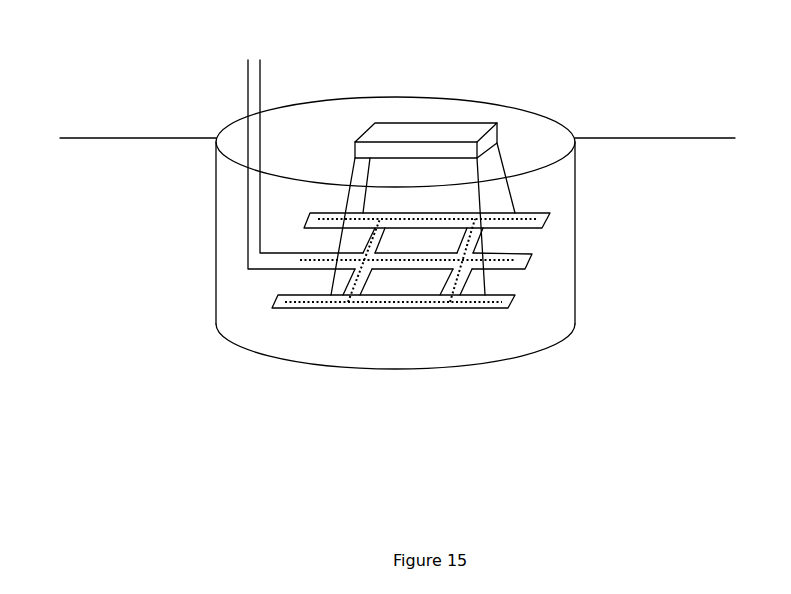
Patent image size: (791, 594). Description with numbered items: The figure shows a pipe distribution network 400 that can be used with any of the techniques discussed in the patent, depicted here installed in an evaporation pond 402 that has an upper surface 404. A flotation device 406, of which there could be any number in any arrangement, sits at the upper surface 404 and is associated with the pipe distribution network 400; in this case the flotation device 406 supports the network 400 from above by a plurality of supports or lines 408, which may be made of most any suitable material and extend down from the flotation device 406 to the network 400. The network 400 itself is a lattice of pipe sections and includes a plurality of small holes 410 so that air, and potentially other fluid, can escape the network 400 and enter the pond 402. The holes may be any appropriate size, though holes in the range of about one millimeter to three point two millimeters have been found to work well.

The pipe distribution network 400 is at (292, 310).
The evaporation pond 402 is at (560, 312).
The upper surface 404 is at (540, 130).
The flotation device 406 is at (455, 133).
The supports or lines 408 is at (512, 192).
The small holes 410 is at (397, 303).